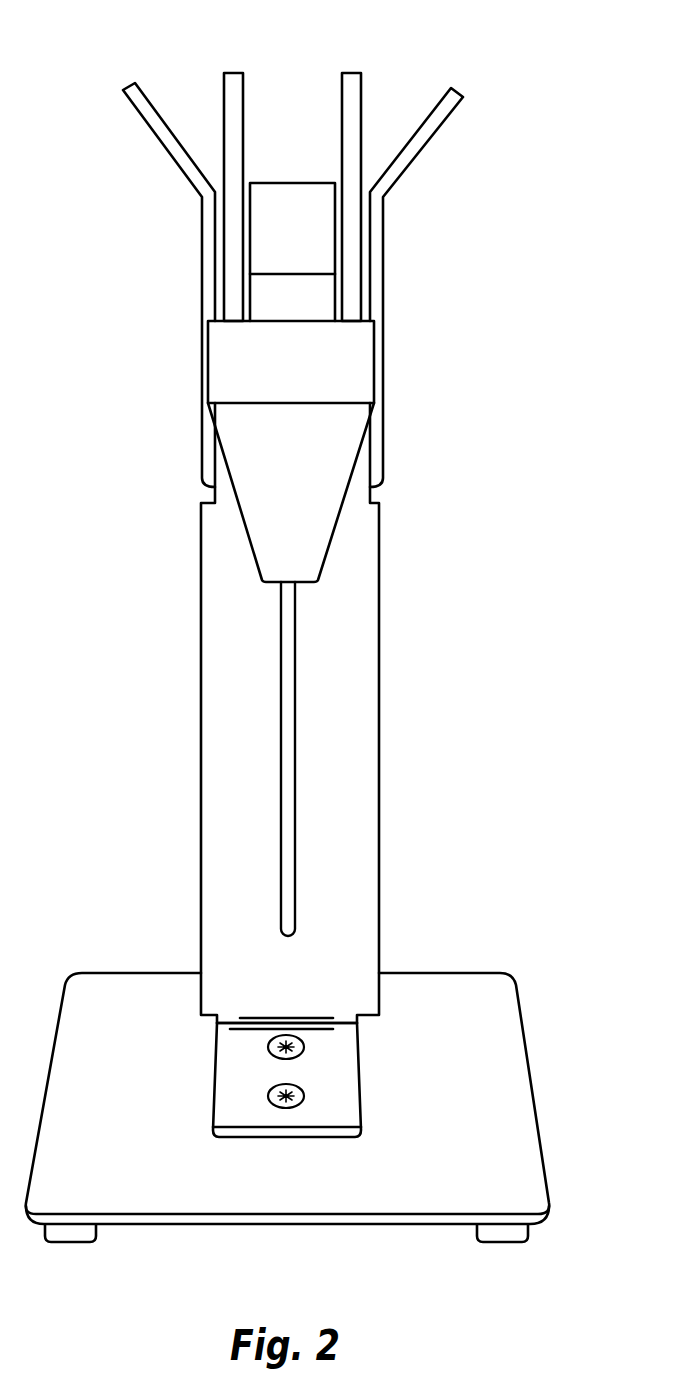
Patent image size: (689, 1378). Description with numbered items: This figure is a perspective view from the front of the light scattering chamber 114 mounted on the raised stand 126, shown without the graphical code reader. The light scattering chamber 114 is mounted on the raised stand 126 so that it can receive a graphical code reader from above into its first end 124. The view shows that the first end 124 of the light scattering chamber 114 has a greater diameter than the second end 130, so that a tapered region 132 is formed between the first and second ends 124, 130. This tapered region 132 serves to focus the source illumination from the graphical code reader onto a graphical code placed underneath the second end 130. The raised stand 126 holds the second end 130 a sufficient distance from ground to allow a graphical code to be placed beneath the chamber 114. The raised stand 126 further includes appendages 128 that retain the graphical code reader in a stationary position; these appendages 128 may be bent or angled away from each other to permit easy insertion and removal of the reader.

The light scattering chamber 114 is at (383, 386).
The first end 124 is at (222, 342).
The raised stand 126 is at (363, 730).
The appendages 128 is at (222, 82).
The second end 130 is at (270, 563).
The tapered region 132 is at (257, 438).